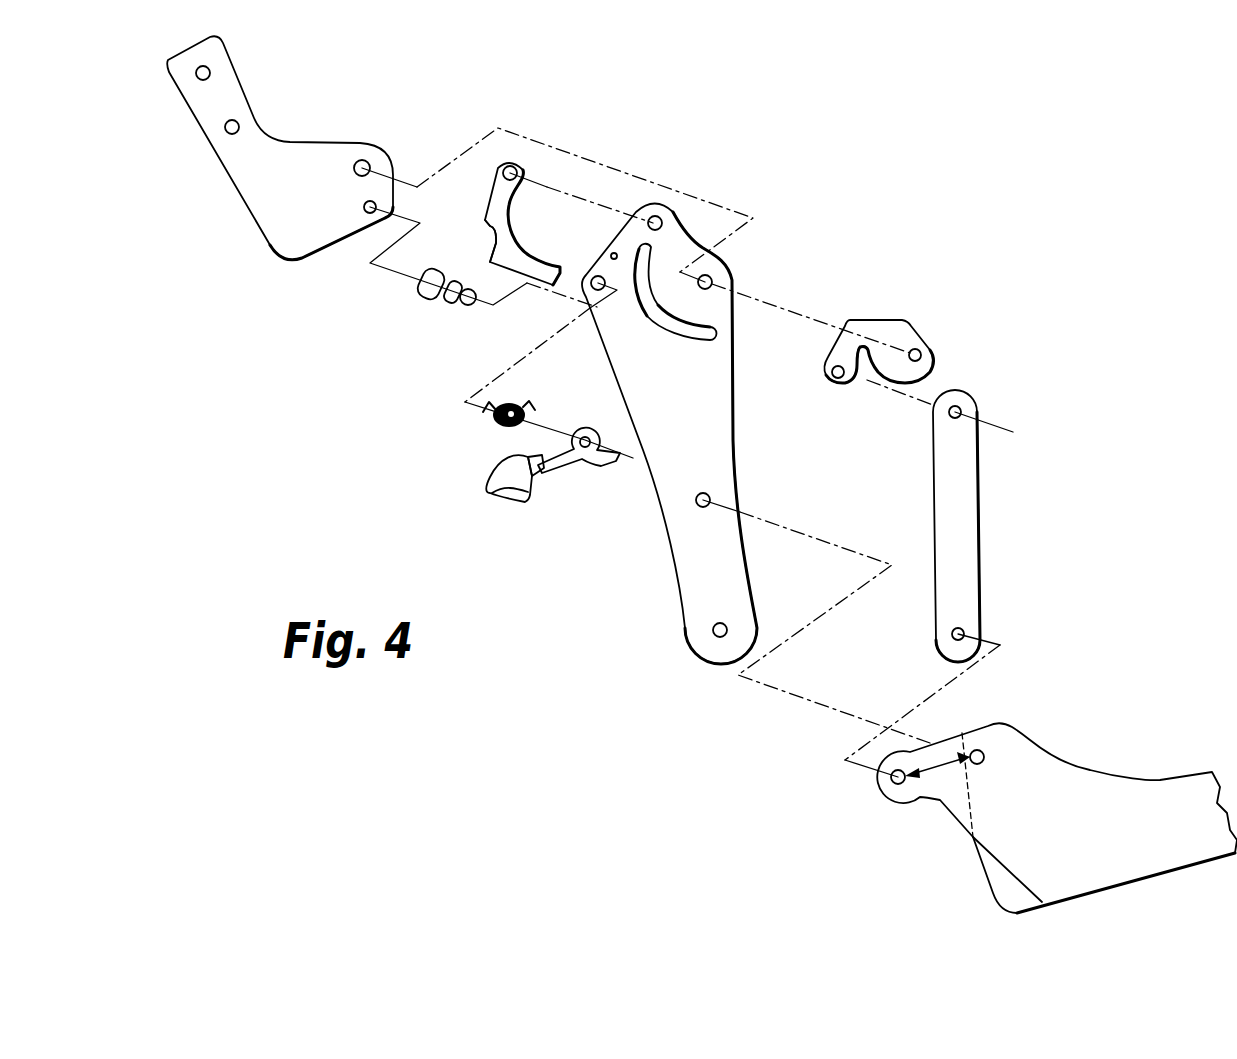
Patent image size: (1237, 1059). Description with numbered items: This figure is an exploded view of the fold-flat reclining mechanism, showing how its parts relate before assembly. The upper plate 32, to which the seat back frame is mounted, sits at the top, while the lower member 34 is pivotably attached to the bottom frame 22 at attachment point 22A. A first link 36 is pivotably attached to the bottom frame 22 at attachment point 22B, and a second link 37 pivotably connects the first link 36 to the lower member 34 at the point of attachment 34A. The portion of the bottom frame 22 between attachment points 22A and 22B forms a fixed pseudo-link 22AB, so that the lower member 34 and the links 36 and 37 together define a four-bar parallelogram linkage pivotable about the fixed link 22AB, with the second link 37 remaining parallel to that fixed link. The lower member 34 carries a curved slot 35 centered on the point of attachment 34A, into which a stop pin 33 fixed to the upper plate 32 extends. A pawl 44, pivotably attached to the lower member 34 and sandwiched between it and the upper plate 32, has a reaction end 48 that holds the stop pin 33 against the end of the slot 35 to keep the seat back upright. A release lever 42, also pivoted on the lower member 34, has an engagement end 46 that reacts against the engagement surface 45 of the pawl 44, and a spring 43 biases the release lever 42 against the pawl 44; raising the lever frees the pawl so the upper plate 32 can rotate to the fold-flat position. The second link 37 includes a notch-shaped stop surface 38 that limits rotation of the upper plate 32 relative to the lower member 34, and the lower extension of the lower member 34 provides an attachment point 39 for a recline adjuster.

The bottom frame 22 is at (1037, 799).
The attachment point 22A is at (982, 752).
The fixed pseudo-link 22AB is at (938, 799).
The attachment point 22B is at (890, 798).
The upper plate 32 is at (248, 92).
The stop pin 33 is at (437, 307).
The lower member 34 is at (691, 465).
The point of attachment 34A is at (711, 277).
The curved slot 35 is at (713, 342).
The first link 36 is at (980, 540).
The second link 37 is at (878, 339).
The stop surface 38 is at (872, 360).
The attachment point 39 is at (720, 637).
The release lever 42 is at (497, 497).
The spring 43 is at (518, 405).
The pawl 44 is at (518, 192).
The engagement surface 45 is at (490, 255).
The engagement end 46 is at (603, 468).
The reaction end 48 is at (572, 267).